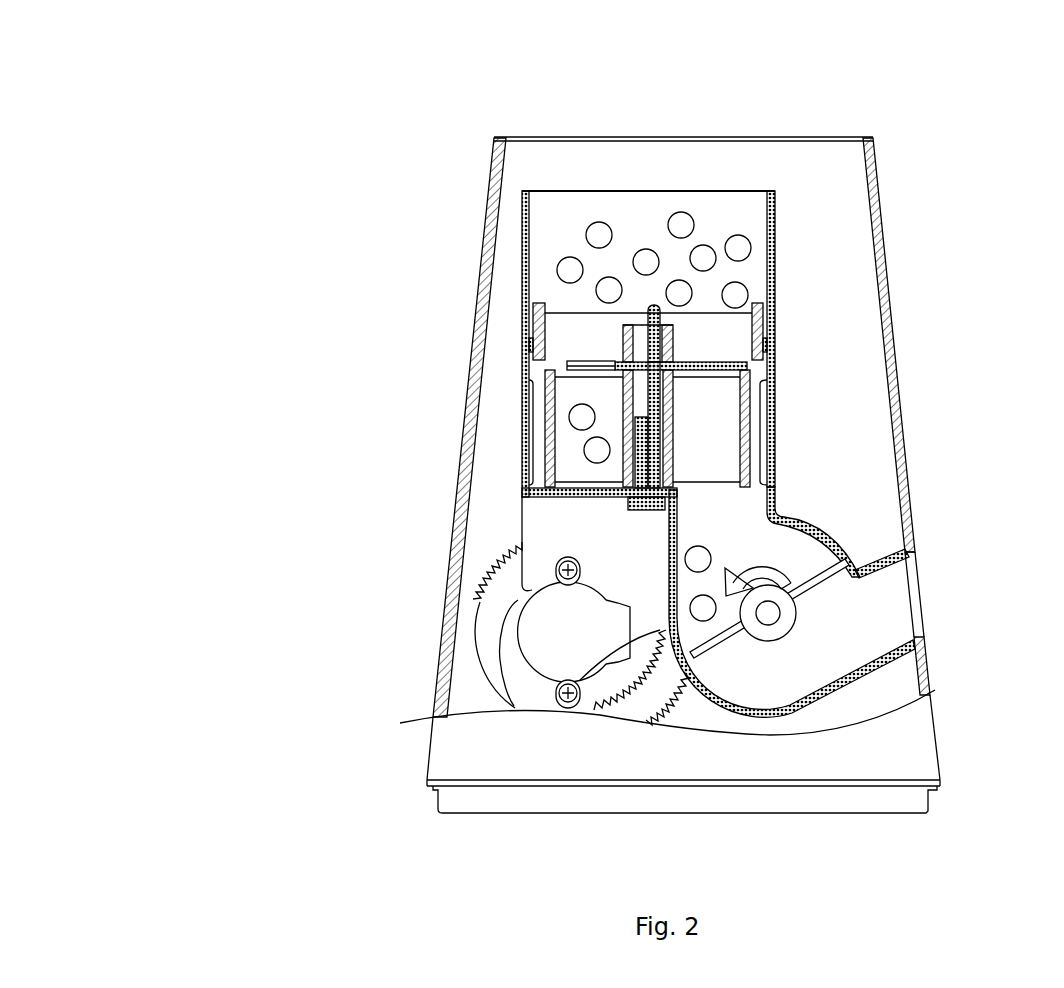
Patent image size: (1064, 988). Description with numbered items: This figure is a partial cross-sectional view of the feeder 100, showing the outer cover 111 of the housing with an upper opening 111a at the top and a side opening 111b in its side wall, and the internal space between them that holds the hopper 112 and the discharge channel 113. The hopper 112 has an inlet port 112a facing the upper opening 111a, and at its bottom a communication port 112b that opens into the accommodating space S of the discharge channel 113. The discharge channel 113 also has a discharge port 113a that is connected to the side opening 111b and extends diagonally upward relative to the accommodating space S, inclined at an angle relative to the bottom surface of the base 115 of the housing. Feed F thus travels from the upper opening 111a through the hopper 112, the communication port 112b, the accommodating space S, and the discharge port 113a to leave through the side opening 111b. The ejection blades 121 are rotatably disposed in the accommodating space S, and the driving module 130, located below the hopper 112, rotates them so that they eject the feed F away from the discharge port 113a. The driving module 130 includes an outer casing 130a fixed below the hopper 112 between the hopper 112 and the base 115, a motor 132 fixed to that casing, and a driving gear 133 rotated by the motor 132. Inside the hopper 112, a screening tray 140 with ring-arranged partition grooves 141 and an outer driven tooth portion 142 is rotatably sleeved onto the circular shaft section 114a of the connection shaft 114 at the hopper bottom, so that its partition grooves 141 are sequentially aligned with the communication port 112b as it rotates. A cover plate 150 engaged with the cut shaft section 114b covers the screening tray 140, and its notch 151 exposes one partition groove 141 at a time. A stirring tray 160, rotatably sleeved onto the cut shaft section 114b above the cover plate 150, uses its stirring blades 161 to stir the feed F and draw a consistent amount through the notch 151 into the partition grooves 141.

The feeder 100 is at (80, 57).
The outer cover 111 is at (480, 246).
The upper opening 111a is at (793, 134).
The side opening 111b is at (931, 582).
The hopper 112 is at (520, 206).
The inlet port 112a is at (693, 170).
The communication port 112b is at (764, 502).
The discharge channel 113 is at (842, 549).
The discharge port 113a is at (903, 608).
The connection shaft 114 is at (378, 345).
The circular shaft section 114a is at (637, 428).
The cut shaft section 114b is at (652, 370).
The base 115 is at (932, 797).
The ejection blades 121 is at (823, 585).
The driving module 130 is at (461, 578).
The outer casing 130a is at (540, 524).
The motor 132 is at (540, 618).
The driving gear 133 is at (490, 658).
The screening tray 140 is at (746, 422).
The partition grooves 141 is at (556, 465).
The driven tooth portion 142 is at (547, 442).
The cover plate 150 is at (747, 367).
The notch 151 is at (592, 338).
The stirring tray 160 is at (760, 322).
The stirring blades 161 is at (550, 317).
The feed F is at (598, 222).
The accommodating space S is at (770, 706).